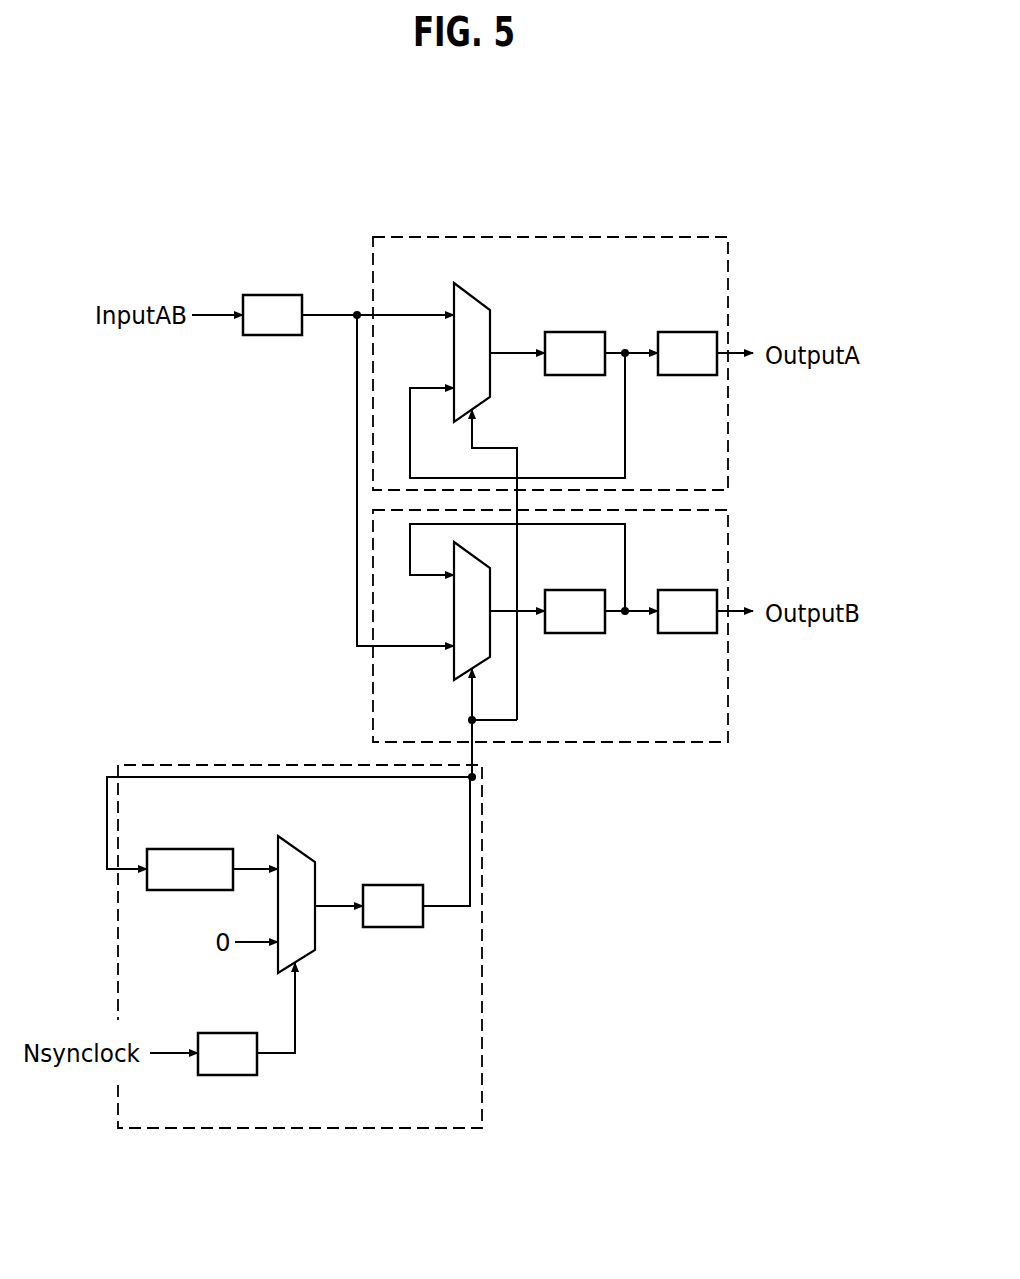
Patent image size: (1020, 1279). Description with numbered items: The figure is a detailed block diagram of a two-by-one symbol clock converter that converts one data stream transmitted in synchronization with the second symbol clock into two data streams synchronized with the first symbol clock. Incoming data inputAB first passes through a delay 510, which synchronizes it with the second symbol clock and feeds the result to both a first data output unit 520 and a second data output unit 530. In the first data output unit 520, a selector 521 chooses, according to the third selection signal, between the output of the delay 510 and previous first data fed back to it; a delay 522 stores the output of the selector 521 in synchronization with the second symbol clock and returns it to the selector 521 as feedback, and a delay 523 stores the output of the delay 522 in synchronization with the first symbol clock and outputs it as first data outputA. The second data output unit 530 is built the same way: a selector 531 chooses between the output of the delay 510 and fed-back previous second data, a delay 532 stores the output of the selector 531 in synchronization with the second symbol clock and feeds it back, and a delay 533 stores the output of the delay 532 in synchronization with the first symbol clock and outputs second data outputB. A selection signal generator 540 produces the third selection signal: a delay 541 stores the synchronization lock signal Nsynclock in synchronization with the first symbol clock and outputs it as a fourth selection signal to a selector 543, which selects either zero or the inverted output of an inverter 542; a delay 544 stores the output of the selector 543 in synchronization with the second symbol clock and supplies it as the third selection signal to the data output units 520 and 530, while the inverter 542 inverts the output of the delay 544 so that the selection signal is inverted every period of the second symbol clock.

The delay 510 is at (274, 298).
The first data output unit 520 is at (563, 237).
The selector 521 is at (473, 302).
The delay 522 is at (577, 333).
The delay 523 is at (689, 333).
The second data output unit 530 is at (665, 743).
The selector 531 is at (454, 608).
The delay 532 is at (577, 591).
The delay 533 is at (689, 591).
The selection signal generator 540 is at (482, 997).
The delay 541 is at (232, 1035).
The inverter 542 is at (186, 852).
The selector 543 is at (306, 855).
The delay 544 is at (399, 885).